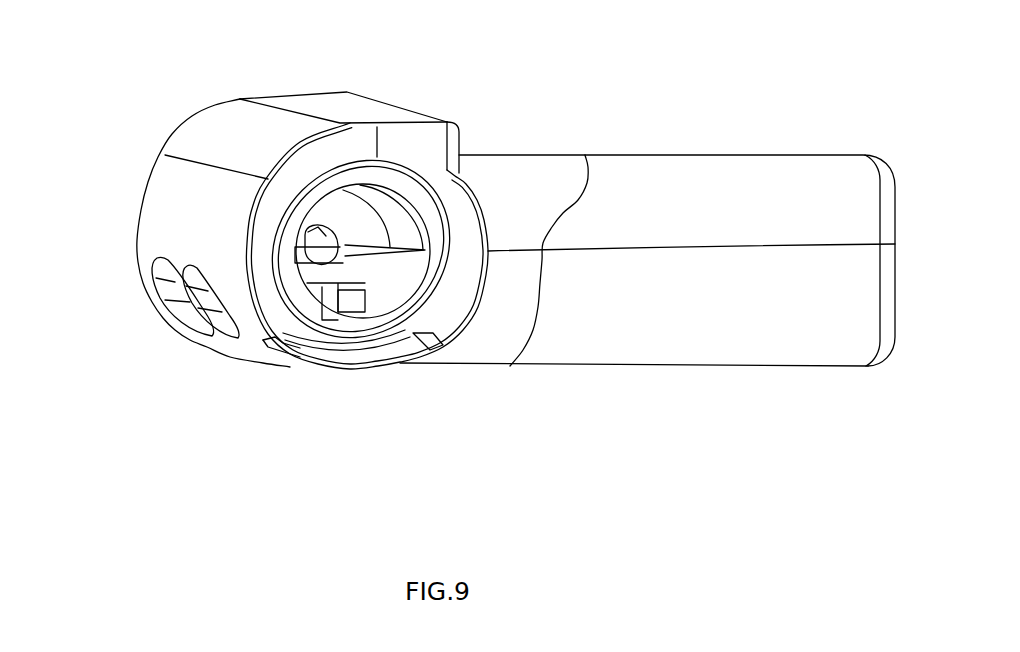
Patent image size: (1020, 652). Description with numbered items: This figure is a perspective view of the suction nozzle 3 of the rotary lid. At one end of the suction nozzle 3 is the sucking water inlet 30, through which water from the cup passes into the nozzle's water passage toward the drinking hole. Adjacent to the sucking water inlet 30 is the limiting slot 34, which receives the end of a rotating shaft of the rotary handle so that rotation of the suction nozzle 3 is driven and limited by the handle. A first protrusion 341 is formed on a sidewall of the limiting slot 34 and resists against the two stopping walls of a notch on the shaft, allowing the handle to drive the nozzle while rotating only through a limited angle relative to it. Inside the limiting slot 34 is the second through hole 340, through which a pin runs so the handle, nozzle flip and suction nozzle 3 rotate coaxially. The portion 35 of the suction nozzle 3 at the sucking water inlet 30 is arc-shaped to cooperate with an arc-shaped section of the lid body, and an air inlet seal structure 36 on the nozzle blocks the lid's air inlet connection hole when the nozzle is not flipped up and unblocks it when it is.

The suction nozzle 3 is at (612, 155).
The sucking water inlet 30 is at (173, 337).
The limiting slot 34 is at (311, 335).
The second through hole 340 is at (360, 298).
The first protrusion 341 is at (345, 233).
The arc-shaped portion 35 is at (180, 210).
The air inlet seal structure 36 is at (173, 293).